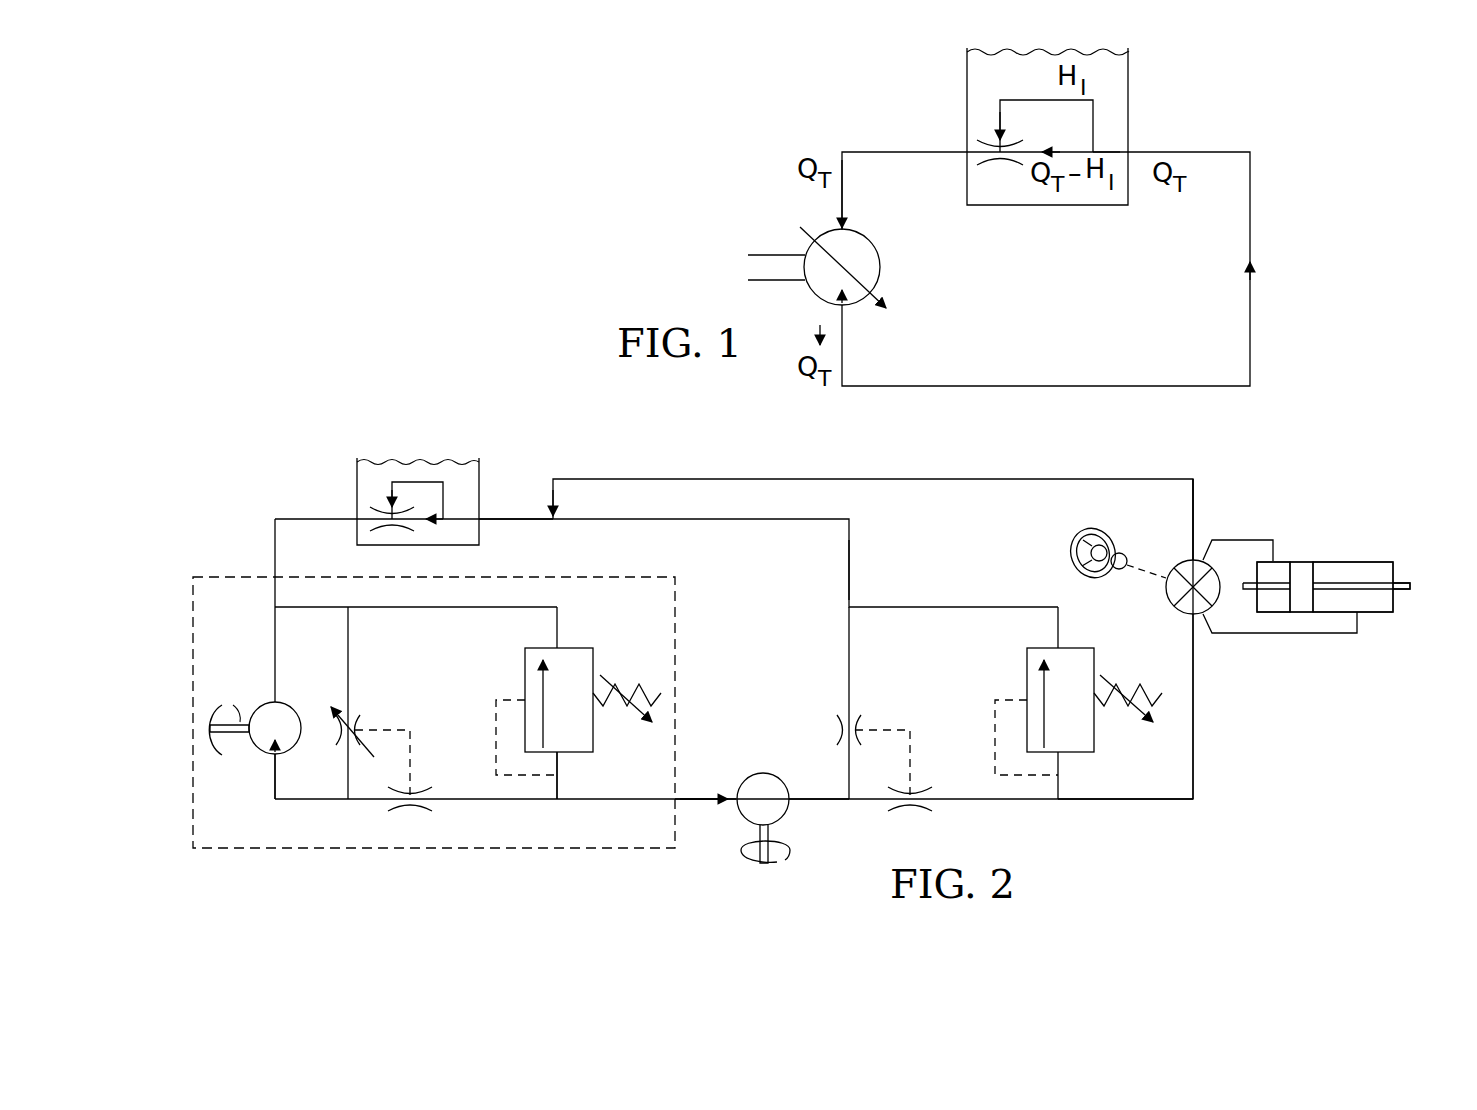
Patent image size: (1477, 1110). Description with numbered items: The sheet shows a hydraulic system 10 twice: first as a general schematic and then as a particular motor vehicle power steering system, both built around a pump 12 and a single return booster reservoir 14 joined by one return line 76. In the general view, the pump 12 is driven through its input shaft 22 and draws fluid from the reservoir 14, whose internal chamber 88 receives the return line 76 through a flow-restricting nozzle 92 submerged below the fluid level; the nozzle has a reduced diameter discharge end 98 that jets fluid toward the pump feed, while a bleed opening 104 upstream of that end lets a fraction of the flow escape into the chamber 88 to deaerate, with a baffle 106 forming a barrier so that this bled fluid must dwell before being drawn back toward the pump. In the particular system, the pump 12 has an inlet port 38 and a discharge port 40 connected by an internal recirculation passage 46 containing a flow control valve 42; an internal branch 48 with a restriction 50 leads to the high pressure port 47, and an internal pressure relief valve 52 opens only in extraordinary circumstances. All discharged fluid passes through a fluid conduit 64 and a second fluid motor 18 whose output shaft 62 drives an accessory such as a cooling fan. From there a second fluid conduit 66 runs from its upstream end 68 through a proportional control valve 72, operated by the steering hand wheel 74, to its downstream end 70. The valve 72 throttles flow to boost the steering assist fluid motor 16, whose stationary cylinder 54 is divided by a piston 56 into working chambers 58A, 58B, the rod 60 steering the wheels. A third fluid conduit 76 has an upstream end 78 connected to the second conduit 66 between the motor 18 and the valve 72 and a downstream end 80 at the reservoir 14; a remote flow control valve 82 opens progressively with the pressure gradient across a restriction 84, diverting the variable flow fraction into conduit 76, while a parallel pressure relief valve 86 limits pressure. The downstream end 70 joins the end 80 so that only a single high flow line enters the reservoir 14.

In FIG. 2, the hydraulic system 10 is at (793, 455).
In FIG. 1, the pump 12 is at (806, 244).
In FIG. 2, the pump 12 is at (246, 575).
In FIG. 1, the reservoir 14 is at (1132, 60).
In FIG. 2, the reservoir 14 is at (494, 462).
In FIG. 2, the steering assist fluid motor 16 is at (1386, 560).
In FIG. 2, the second fluid motor 18 is at (758, 772).
In FIG. 2, the input shaft 22 is at (240, 727).
In FIG. 2, the inlet port 38 is at (274, 703).
In FIG. 2, the discharge port 40 is at (274, 756).
In FIG. 2, the flow control valve 42 is at (366, 716).
In FIG. 2, the internal recirculation passage 46 is at (350, 652).
In FIG. 2, the high pressure port 47 is at (677, 802).
In FIG. 2, the internal branch 48 is at (557, 805).
In FIG. 2, the restriction 50 is at (418, 805).
In FIG. 2, the internal pressure relief valve 52 is at (588, 646).
In FIG. 2, the stationary cylinder 54 is at (1332, 563).
In FIG. 2, the piston 56 is at (1297, 567).
In FIG. 2, the working chamber 58A is at (1272, 605).
In FIG. 2, the working chamber 58B is at (1362, 605).
In FIG. 2, the rod 60 is at (1405, 595).
In FIG. 2, the output shaft 62 is at (765, 863).
In FIG. 2, the fluid conduit 64 is at (705, 795).
In FIG. 2, the second fluid conduit 66 is at (1098, 805).
In FIG. 2, the upstream end 68 is at (790, 795).
In FIG. 2, the downstream end 70 is at (685, 479).
In FIG. 2, the proportional control valve 72 is at (1168, 603).
In FIG. 2, the steering hand wheel 74 is at (1078, 550).
In FIG. 1, the third fluid conduit 76 is at (1252, 178).
In FIG. 2, the third fluid conduit 76 is at (845, 580).
In FIG. 2, the upstream end 78 is at (851, 802).
In FIG. 2, the downstream end 80 is at (482, 519).
In FIG. 2, the flow control valve 82 is at (862, 730).
In FIG. 2, the restriction 84 is at (915, 805).
In FIG. 2, the pressure relief valve 86 is at (1022, 650).
In FIG. 1, the internal chamber 88 is at (1130, 100).
In FIG. 2, the internal chamber 88 is at (365, 488).
In FIG. 1, the nozzle 92 is at (1000, 166).
In FIG. 2, the discharge end 98 is at (390, 530).
In FIG. 1, the bleed opening 104 is at (1097, 150).
In FIG. 2, the baffle 106 is at (278, 519).